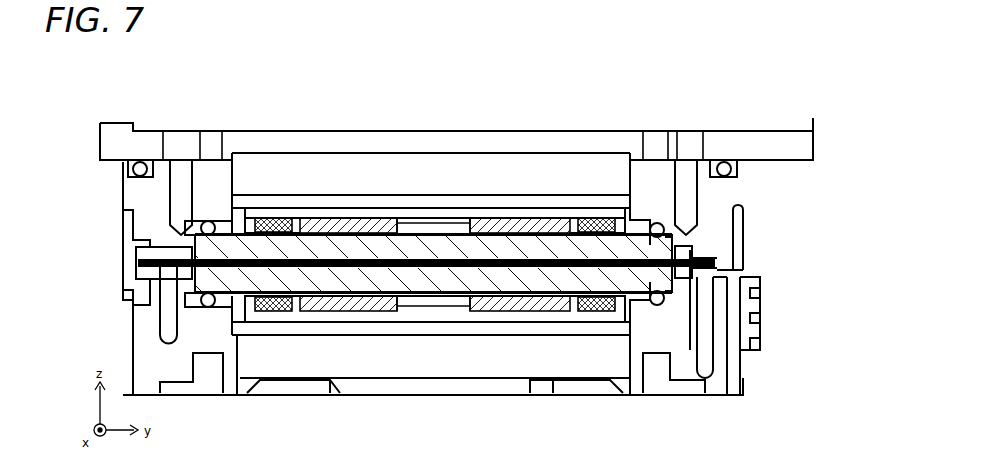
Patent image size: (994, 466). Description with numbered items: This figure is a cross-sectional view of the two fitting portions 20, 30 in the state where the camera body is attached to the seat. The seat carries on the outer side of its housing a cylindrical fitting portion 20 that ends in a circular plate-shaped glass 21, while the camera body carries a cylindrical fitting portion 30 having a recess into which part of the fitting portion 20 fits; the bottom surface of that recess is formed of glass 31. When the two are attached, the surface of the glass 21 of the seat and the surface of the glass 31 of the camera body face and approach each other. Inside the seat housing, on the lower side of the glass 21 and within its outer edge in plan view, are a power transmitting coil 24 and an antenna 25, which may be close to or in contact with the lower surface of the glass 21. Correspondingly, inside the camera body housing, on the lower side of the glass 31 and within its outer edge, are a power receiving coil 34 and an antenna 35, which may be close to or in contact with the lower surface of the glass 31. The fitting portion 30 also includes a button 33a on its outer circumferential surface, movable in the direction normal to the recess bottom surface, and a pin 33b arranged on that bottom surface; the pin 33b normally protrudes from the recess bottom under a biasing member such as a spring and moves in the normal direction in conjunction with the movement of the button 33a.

The fitting portion 20 is at (722, 128).
The glass 21 is at (428, 225).
The power transmitting coil 24 is at (340, 222).
The antenna 25 is at (272, 216).
The fitting portion 30 is at (730, 396).
The glass 31 is at (433, 293).
The button 33a is at (767, 310).
The pin 33b is at (707, 268).
The power receiving coil 34 is at (352, 315).
The antenna 35 is at (272, 313).